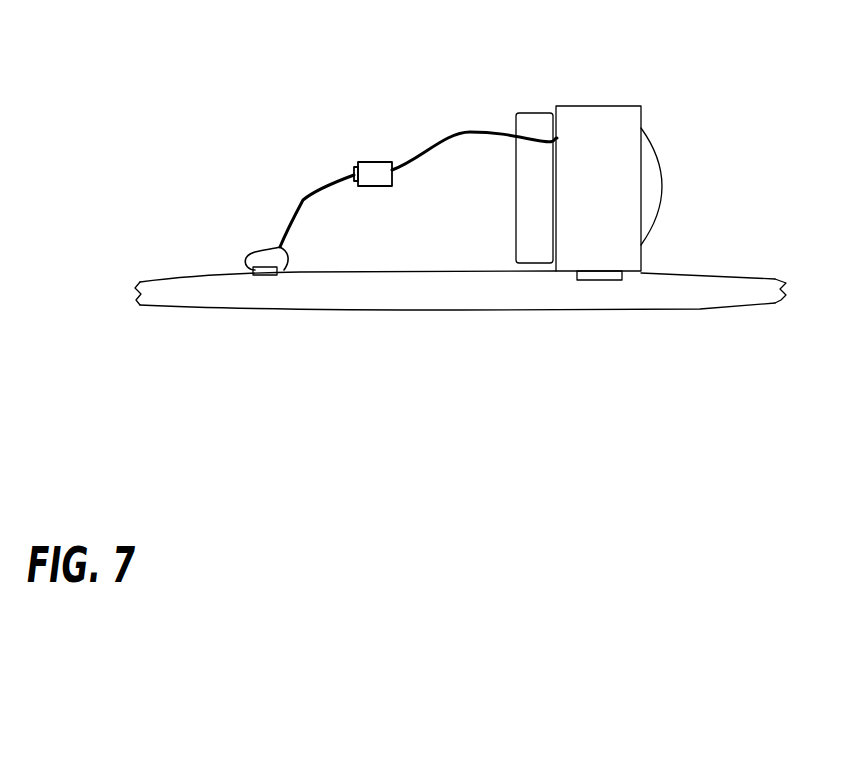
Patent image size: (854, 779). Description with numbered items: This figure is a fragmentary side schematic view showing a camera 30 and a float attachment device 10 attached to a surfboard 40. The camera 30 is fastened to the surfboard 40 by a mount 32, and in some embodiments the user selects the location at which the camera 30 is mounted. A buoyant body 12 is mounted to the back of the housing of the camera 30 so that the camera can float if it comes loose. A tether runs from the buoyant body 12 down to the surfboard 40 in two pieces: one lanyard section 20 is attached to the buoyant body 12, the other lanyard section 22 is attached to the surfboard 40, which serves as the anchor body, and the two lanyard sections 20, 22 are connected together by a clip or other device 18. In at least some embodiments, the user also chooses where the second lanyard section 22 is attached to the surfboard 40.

The float attachment device 10 is at (306, 37).
The buoyant body 12 is at (535, 112).
The clip 18 is at (362, 162).
The lanyard section 20 is at (437, 145).
The lanyard section 22 is at (305, 200).
The camera 30 is at (600, 105).
The mount 32 is at (602, 279).
The surfboard 40 is at (345, 300).